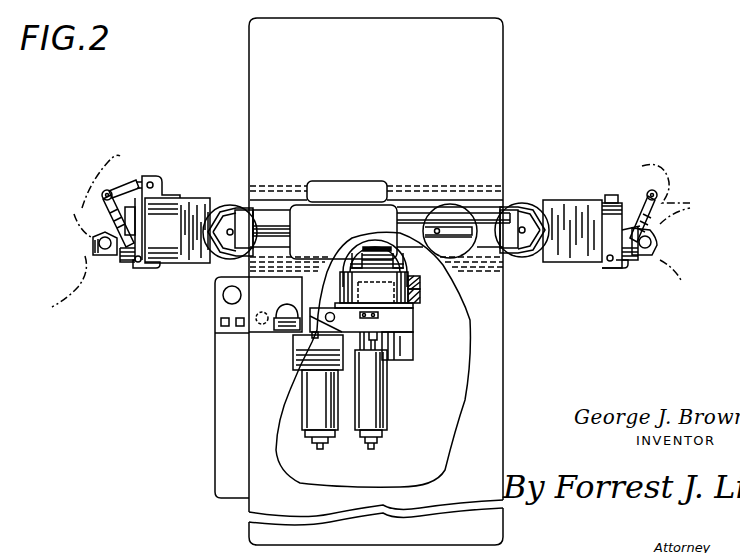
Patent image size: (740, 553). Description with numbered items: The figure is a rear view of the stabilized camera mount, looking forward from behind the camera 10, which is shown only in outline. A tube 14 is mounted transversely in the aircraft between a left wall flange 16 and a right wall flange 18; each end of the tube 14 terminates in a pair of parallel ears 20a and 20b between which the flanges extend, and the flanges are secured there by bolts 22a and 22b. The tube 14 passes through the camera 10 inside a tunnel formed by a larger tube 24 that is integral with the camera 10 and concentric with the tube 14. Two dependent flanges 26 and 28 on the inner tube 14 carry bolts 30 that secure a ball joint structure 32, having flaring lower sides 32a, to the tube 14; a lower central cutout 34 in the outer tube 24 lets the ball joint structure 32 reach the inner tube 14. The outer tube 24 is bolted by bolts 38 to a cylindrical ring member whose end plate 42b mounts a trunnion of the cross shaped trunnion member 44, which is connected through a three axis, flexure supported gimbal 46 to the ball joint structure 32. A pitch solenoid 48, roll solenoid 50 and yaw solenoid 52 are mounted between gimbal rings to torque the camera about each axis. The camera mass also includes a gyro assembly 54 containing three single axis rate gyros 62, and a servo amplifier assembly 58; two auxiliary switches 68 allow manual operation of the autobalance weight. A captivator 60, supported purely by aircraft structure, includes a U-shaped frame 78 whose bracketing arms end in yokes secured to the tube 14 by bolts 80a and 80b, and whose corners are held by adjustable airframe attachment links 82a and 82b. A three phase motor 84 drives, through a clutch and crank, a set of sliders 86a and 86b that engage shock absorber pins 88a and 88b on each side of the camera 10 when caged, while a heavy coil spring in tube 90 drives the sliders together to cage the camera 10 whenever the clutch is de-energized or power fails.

The camera 10 is at (504, 74).
The tube 14 is at (124, 252).
The left wall flange 16 is at (82, 283).
The right wall flange 18 is at (676, 288).
The parallel ears 20a is at (92, 243).
The parallel ears 20b is at (658, 245).
The bolts 22a is at (102, 256).
The bolts 22b is at (644, 258).
The larger tube 24 is at (410, 184).
The dependent flange 26 is at (350, 243).
The dependent flange 28 is at (397, 250).
The bolts 30 is at (372, 250).
The ball joint structure 32 is at (415, 284).
The flaring lower sides 32a is at (414, 306).
The lower central cutout 34 is at (378, 248).
The bolts 38 is at (421, 282).
The end plate 42b is at (422, 296).
The cross shaped trunnion member 44 is at (414, 318).
The three axis, flexure supported gimbal 46 is at (412, 342).
The pitch solenoid 48 is at (386, 400).
The roll solenoid 50 is at (316, 404).
The yaw solenoid 52 is at (298, 372).
The gyro assembly 54 is at (258, 333).
The servo amplifier assembly 58 is at (226, 441).
The captivator 60 is at (334, 181).
The single axis rate gyros 62 is at (287, 331).
The auxiliary switches 68 is at (233, 327).
The U-shaped frame 78 is at (176, 264).
The bolts 80a is at (130, 190).
The bolts 80b is at (612, 196).
The adjustable airframe attachment link 82a is at (95, 210).
The adjustable airframe attachment link 82b is at (656, 210).
The 400 c.p.s. 3 phase motor 84 is at (270, 214).
The slider 86a is at (229, 205).
The slider 86b is at (530, 212).
The shock absorber pin 88a is at (230, 236).
The shock absorber pin 88b is at (524, 236).
The tube 90 is at (484, 212).